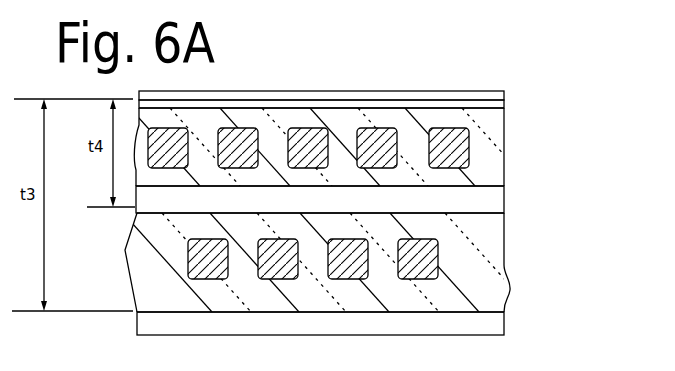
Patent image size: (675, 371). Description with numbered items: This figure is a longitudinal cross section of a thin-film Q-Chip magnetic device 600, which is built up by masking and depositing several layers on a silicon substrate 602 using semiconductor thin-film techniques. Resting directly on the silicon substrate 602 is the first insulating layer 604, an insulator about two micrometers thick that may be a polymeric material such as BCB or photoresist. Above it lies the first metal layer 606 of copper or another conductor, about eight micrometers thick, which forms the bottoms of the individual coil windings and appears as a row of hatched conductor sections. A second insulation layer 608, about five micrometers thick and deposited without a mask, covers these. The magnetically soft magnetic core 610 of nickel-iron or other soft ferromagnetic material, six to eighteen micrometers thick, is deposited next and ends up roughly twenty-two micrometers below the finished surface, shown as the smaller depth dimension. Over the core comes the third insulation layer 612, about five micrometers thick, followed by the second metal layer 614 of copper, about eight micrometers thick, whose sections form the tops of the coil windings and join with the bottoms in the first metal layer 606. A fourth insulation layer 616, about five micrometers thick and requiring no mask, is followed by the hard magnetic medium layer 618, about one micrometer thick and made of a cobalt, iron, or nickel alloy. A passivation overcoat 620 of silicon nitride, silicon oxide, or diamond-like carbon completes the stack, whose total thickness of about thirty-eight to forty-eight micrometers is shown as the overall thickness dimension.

The thin-film Q-Chip magnetic device 600 is at (424, 74).
The silicon substrate 602 is at (510, 327).
The first layer (ins-1) 604 is at (511, 298).
The first metal layer (met-1) 606 is at (509, 261).
The second insulation layer (ins-2) 608 is at (509, 233).
The magnetically soft magnetic core (mag-1) 610 is at (326, 206).
The third insulation layer (ins-3) 612 is at (494, 172).
The second metal layer (met-2) 614 is at (496, 152).
The fourth insulation layer (ins-4) 616 is at (494, 125).
The hard magnetic medium layer (mag-2) 618 is at (506, 105).
The passivation overcoat (psvn-1) 620 is at (506, 93).